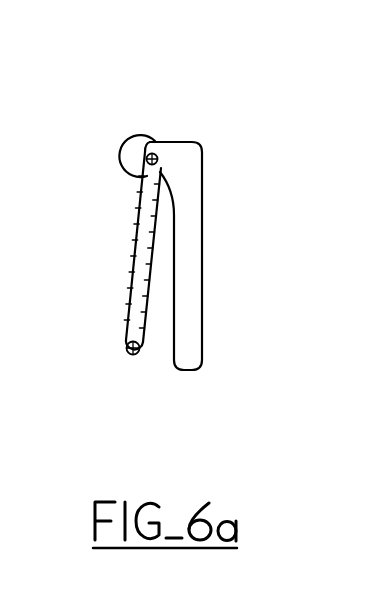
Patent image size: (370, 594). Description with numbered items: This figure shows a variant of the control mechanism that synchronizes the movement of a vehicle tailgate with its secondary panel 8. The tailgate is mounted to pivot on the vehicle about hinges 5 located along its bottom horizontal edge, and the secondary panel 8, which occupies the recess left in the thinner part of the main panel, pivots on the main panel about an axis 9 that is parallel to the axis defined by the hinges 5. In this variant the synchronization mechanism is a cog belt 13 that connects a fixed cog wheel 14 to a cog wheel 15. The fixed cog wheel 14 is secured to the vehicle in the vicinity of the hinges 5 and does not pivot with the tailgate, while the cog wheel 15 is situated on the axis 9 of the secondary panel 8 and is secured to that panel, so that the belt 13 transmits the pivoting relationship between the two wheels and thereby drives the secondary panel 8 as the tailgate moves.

The hinges 5 is at (150, 364).
The secondary panel 8 is at (188, 238).
The axis 9 is at (143, 135).
The cog belt 13 is at (132, 278).
The fixed cog wheel 14 is at (128, 354).
The cog wheel 15 is at (157, 154).